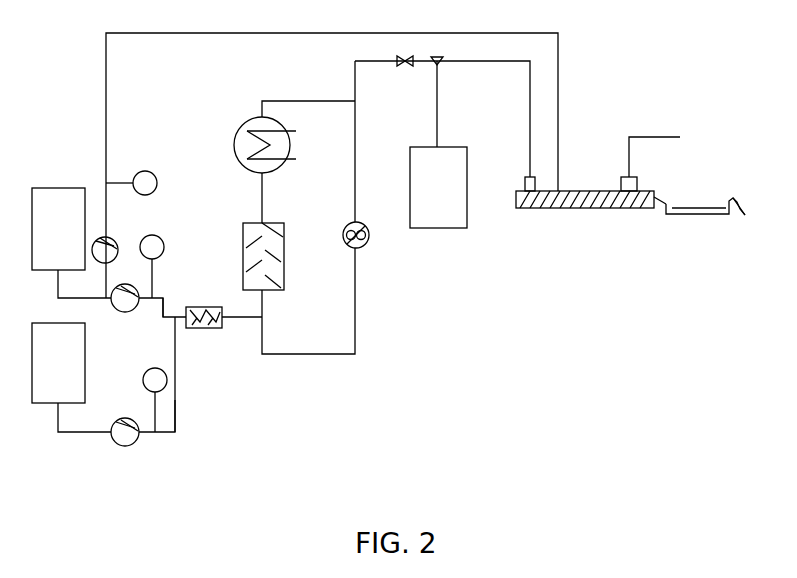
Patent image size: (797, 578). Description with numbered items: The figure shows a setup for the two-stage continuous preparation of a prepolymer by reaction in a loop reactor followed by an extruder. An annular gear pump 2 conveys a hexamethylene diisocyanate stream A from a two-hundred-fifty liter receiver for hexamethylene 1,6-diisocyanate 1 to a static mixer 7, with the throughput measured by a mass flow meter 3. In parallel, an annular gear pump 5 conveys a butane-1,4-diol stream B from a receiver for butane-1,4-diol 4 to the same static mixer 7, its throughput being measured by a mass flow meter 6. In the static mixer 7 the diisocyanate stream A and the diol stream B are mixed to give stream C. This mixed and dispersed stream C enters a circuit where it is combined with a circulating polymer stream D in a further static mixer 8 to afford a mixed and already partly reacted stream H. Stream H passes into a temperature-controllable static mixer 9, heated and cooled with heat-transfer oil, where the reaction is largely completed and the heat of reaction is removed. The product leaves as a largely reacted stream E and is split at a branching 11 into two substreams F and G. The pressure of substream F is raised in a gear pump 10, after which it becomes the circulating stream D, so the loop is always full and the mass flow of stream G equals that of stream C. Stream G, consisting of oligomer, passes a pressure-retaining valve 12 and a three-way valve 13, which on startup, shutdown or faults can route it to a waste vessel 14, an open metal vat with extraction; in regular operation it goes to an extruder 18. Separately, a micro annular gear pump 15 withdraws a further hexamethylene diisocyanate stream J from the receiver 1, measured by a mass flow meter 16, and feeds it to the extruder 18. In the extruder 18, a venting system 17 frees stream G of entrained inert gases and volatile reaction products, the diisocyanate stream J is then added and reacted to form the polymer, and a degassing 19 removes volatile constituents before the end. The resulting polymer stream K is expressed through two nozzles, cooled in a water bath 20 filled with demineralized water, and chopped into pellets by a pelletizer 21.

The receiver for hexamethylene 1,6-diisocyanate 1 is at (63, 243).
The annular gear pump 2 is at (148, 310).
The mass flow meter 3 is at (159, 266).
The receiver for butane-1,4-diol 4 is at (63, 377).
The annular gear pump 5 is at (143, 393).
The mass flow meter 6 is at (147, 400).
The static mixer 7 is at (204, 332).
The static mixer 8 is at (253, 256).
The temperature-controllable static mixer 9 is at (255, 145).
The gear pump 10 is at (369, 245).
The branching 11 is at (368, 84).
The pressure-retaining valve 12 is at (406, 73).
The three-way valve 13 is at (445, 93).
The waste vessel 14 is at (438, 203).
The micro annular gear pump 15 is at (110, 240).
The mass flow meter 16 is at (133, 171).
The venting system 17 is at (519, 175).
The extruder 18 is at (585, 211).
The degassing 19 is at (638, 164).
The bath 20 is at (705, 220).
The pelletizer 21 is at (749, 207).
The hexamethylene 1,6-diisocyanate stream A is at (163, 299).
The butane-1,4-diol stream B is at (182, 416).
The mixed and dispersed stream C is at (242, 326).
The circulating polymer stream D is at (308, 301).
The largely reacted stream E is at (308, 99).
The substream F is at (345, 161).
The substream G is at (442, 111).
The mixed and partly reacted stream H is at (252, 198).
The hexamethylene 1,6-diisocyanate stream J is at (322, 165).
The polymer stream K is at (661, 191).